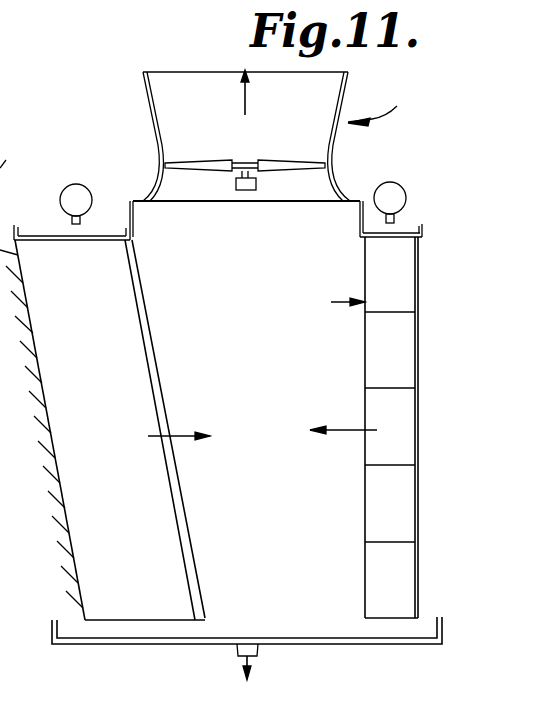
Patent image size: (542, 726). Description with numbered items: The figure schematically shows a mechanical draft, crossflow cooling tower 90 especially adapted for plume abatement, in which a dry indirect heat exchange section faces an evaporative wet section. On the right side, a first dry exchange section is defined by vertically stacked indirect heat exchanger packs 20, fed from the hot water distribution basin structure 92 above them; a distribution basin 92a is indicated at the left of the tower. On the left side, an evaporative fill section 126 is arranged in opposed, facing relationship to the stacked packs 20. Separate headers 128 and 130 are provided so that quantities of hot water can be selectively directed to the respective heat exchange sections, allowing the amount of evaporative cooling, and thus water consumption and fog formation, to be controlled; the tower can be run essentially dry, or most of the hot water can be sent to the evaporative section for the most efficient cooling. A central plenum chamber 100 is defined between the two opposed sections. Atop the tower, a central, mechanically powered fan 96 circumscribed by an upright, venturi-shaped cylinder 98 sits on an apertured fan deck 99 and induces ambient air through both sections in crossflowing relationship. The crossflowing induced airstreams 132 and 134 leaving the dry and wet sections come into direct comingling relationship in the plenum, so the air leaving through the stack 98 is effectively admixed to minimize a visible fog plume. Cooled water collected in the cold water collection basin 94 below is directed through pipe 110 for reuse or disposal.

The indirect heat exchanger pack 20 is at (331, 302).
The mechanical draft crossflow cooling tower 90 is at (386, 105).
The hot water distribution basin structure 92 is at (422, 225).
The distribution basin 92a is at (18, 150).
The cold water collection basin 94 is at (127, 645).
The fan 96 is at (215, 162).
The venturi-shaped cylinder 98 is at (348, 80).
The apertured fan deck 99 is at (350, 196).
The central plenum chamber 100 is at (276, 283).
The pipe 110 is at (259, 648).
The evaporative fill section 126 is at (102, 422).
The header 128 is at (397, 183).
The header 130 is at (88, 188).
The induced airstream 132 is at (330, 426).
The induced airstream 134 is at (183, 432).